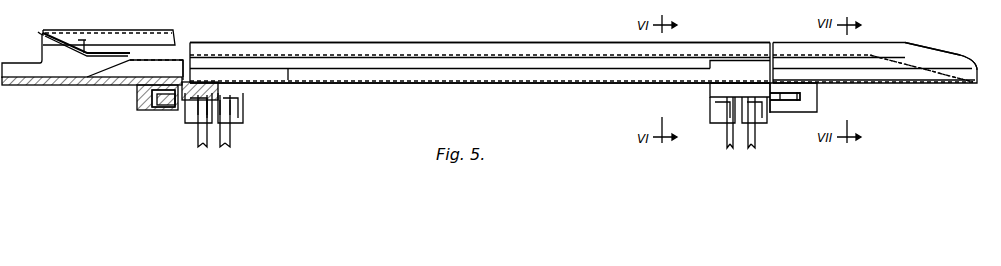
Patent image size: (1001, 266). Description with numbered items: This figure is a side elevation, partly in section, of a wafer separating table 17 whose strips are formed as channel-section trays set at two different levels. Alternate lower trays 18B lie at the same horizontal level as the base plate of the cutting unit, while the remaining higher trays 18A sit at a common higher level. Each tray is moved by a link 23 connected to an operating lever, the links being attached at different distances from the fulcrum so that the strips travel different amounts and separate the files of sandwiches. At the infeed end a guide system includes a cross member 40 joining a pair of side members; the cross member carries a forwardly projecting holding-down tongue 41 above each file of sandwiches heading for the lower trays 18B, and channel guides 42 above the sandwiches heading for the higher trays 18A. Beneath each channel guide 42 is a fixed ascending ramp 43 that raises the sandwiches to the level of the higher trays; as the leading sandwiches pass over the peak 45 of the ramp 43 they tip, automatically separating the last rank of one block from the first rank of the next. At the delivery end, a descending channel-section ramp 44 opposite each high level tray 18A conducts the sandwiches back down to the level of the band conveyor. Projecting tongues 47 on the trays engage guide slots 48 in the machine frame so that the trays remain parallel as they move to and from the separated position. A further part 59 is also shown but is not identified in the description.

The wafer separating table 17 is at (484, 41).
The higher trays 18A is at (447, 42).
The lower trays 18B is at (455, 84).
The links 23 is at (225, 148).
The cross member 40 is at (40, 35).
The holding-down tongue 41 is at (100, 54).
The channel guide 42 is at (173, 35).
The ascending ramp 43 is at (130, 78).
The descending channel-section ramp 44 is at (918, 60).
The peak 45 is at (181, 57).
The projecting tongue 47 is at (165, 108).
The guide slot 48 is at (146, 110).
The end block 59 is at (12, 63).